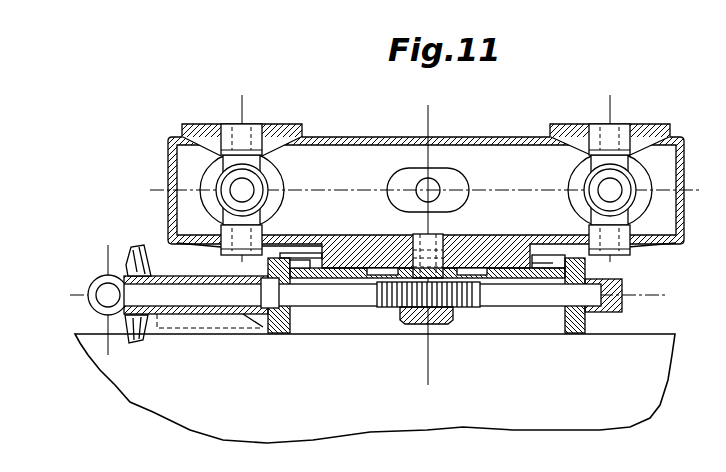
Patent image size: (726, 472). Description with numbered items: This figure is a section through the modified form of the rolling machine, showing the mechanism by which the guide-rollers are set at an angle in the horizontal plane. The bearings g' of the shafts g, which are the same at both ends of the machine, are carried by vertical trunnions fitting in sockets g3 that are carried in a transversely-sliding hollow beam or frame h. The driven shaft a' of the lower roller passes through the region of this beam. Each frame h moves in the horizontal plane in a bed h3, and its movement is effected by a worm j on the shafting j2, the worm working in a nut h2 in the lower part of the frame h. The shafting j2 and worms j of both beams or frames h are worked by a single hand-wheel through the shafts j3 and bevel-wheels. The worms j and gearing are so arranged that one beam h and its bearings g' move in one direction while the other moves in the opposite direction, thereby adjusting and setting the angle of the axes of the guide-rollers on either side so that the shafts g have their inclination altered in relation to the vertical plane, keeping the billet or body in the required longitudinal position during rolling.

The transversely-sliding hollow beam or frame h is at (182, 207).
The sockets g3 is at (243, 132).
The bearings g' is at (426, 188).
The shafts g is at (426, 201).
The driven shaft a' is at (428, 179).
The shafts j3 is at (105, 298).
The bed h3 is at (307, 273).
The nut h2 is at (430, 313).
The worm j is at (461, 307).
The shafting j2 is at (558, 299).